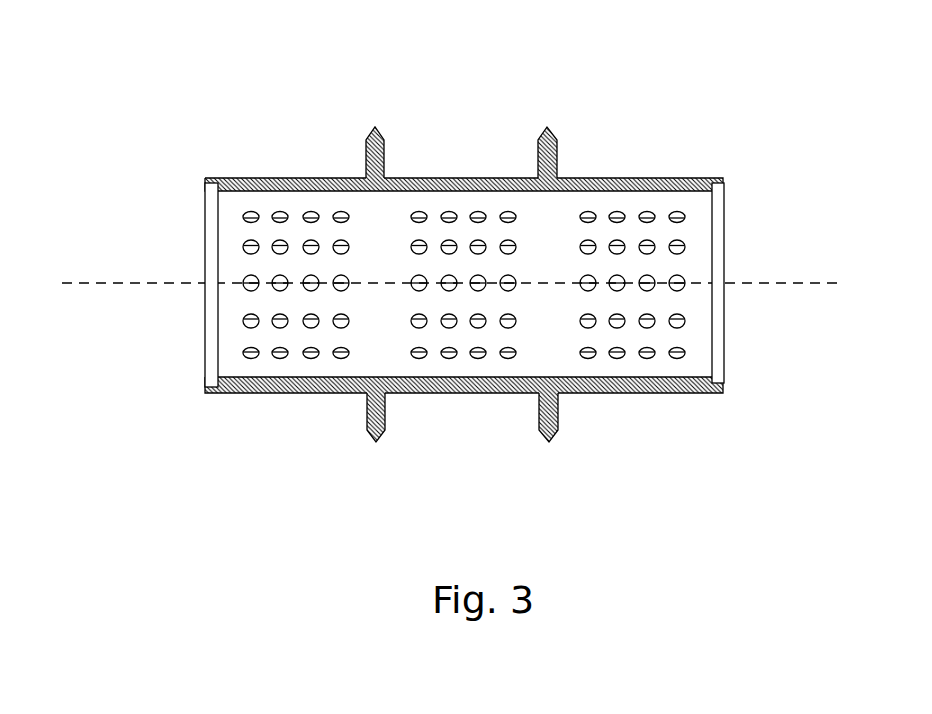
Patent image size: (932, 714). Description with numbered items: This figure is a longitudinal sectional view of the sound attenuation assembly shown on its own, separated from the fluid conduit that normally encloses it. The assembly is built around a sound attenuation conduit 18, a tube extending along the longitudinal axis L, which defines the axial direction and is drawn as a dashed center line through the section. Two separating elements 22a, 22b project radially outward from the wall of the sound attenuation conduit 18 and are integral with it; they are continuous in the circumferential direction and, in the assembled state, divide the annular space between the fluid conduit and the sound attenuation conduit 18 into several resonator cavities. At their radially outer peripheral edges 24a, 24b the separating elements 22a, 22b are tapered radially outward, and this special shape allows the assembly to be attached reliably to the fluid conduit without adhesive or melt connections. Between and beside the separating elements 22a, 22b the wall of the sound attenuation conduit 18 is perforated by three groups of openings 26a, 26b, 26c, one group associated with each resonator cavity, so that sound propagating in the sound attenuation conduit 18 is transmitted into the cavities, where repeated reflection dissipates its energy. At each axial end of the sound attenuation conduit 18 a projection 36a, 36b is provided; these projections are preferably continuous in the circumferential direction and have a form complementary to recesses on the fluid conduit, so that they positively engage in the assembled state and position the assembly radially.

The sound attenuation conduit 18 is at (464, 267).
The separating element 22a is at (356, 177).
The separating element 22b is at (559, 176).
The radially outer peripheral edge 24a is at (380, 133).
The radially outer peripheral edge 24b is at (544, 131).
The openings 26a is at (278, 209).
The openings 26b is at (478, 209).
The openings 26c is at (677, 208).
The projection 36a is at (208, 391).
The projection 36b is at (725, 382).
The longitudinal axis L is at (840, 280).